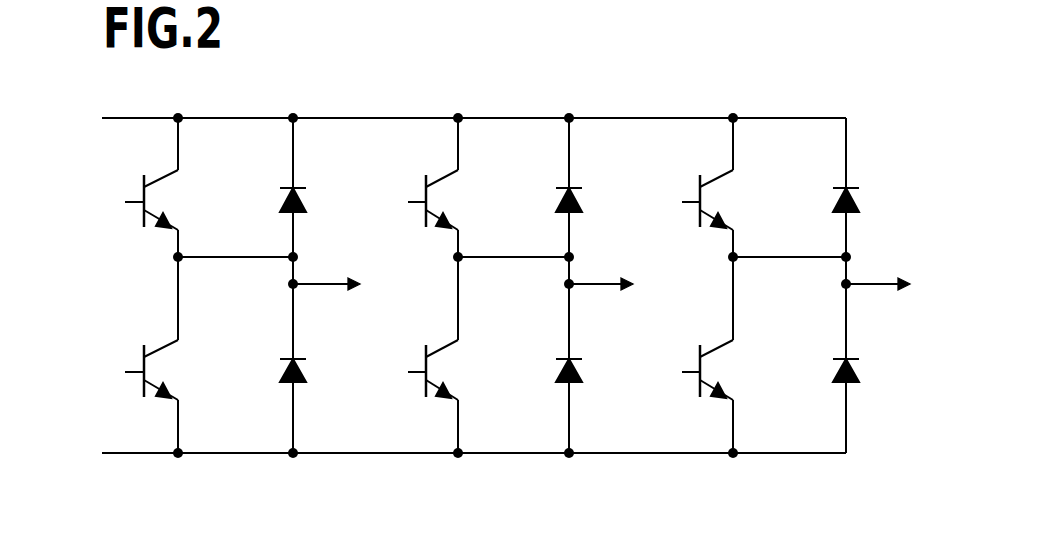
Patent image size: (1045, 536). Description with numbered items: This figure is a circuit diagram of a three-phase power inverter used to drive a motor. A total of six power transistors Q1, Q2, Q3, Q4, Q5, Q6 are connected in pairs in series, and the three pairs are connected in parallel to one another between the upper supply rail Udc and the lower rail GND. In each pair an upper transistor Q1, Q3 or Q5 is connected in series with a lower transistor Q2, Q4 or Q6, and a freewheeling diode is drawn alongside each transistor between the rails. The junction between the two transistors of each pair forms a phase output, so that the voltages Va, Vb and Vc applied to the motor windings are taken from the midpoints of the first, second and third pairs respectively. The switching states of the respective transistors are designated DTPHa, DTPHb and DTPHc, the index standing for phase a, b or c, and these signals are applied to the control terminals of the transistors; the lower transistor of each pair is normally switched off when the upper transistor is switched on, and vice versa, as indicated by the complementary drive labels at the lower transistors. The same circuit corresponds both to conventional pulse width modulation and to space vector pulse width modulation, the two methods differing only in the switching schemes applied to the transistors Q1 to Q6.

The DC bus voltage rail Udc is at (451, 116).
The ground rail GND is at (451, 461).
The power transistor Q1 is at (182, 229).
The power transistor Q2 is at (182, 396).
The power transistor Q3 is at (462, 229).
The power transistor Q4 is at (462, 396).
The power transistor Q5 is at (736, 229).
The power transistor Q6 is at (736, 396).
The switching state DTPHa is at (90, 208).
The switching state DTPHb is at (379, 208).
The switching state DTPHc is at (655, 208).
The voltage applied to the motor winding Va is at (329, 268).
The voltage applied to the motor winding Vb is at (605, 268).
The voltage applied to the motor winding Vc is at (884, 268).